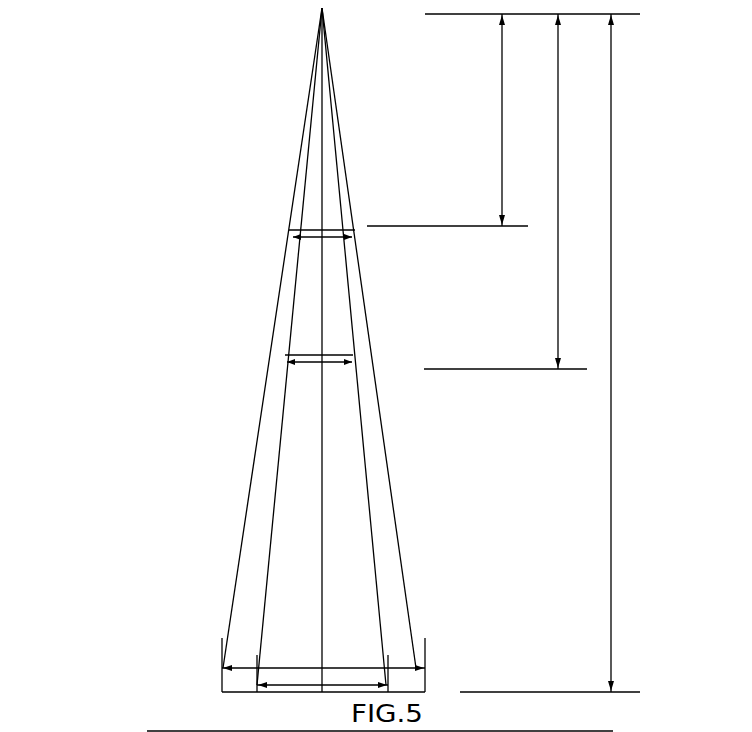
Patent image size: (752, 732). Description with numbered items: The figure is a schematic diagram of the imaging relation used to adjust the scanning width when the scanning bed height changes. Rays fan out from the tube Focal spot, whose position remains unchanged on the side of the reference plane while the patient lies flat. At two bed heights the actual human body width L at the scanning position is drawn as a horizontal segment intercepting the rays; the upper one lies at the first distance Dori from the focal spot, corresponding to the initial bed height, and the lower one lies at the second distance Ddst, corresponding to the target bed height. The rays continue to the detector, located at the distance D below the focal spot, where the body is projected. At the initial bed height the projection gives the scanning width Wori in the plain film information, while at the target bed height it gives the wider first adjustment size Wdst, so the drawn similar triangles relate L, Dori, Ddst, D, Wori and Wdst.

The tube focal spot Focal spot is at (321, 10).
The actual human body width L is at (310, 228).
The first adjustment size Wdst is at (322, 668).
The scanning width Wori is at (330, 665).
The first distance Dori is at (454, 120).
The second distance Ddst is at (511, 191).
The distance between the tube focal spot and the detector D is at (613, 353).